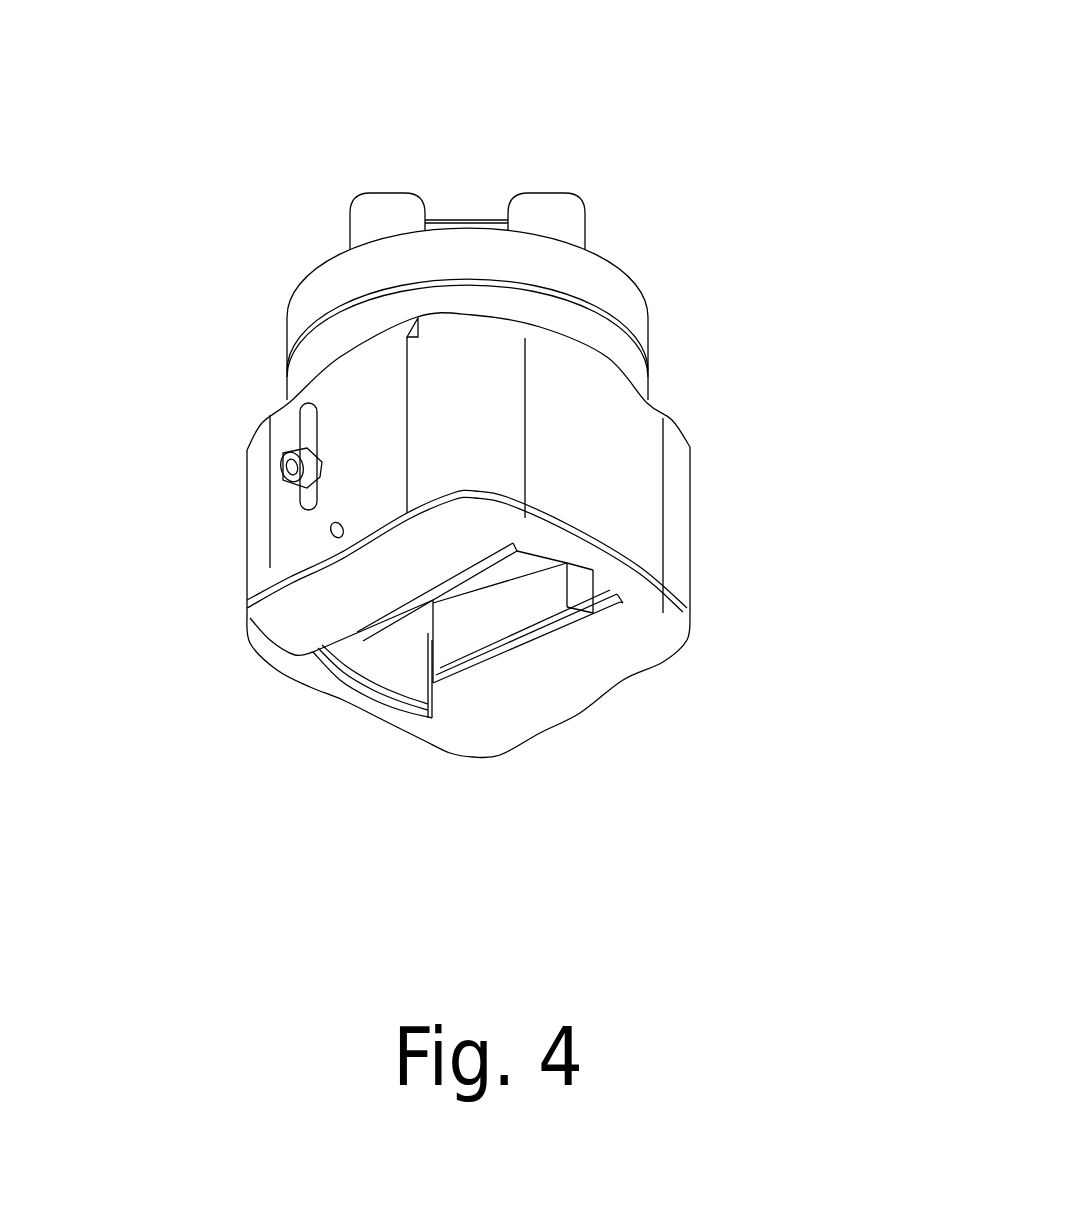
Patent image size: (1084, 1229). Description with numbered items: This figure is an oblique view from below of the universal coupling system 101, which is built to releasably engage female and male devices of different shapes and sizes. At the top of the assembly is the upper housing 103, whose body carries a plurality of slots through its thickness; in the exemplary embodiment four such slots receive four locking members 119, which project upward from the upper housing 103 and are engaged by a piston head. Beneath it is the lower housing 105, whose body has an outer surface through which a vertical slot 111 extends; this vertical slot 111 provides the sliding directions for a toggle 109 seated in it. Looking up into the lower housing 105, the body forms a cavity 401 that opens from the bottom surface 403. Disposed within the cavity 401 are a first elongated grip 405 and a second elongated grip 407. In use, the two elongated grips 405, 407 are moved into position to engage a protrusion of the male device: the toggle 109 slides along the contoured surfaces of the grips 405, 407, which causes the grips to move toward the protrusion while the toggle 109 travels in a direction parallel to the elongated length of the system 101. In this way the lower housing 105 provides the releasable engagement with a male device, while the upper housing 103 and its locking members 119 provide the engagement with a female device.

The universal coupling system 101 is at (225, 142).
The upper housing 103 is at (220, 286).
The locking members 119 is at (570, 191).
The lower housing 105 is at (790, 532).
The vertical slot 111 is at (303, 433).
The toggle 109 is at (285, 477).
The cavity 401 is at (388, 668).
The bottom surface 403 is at (605, 655).
The first elongated grip 405 is at (575, 610).
The second elongated grip 407 is at (490, 553).